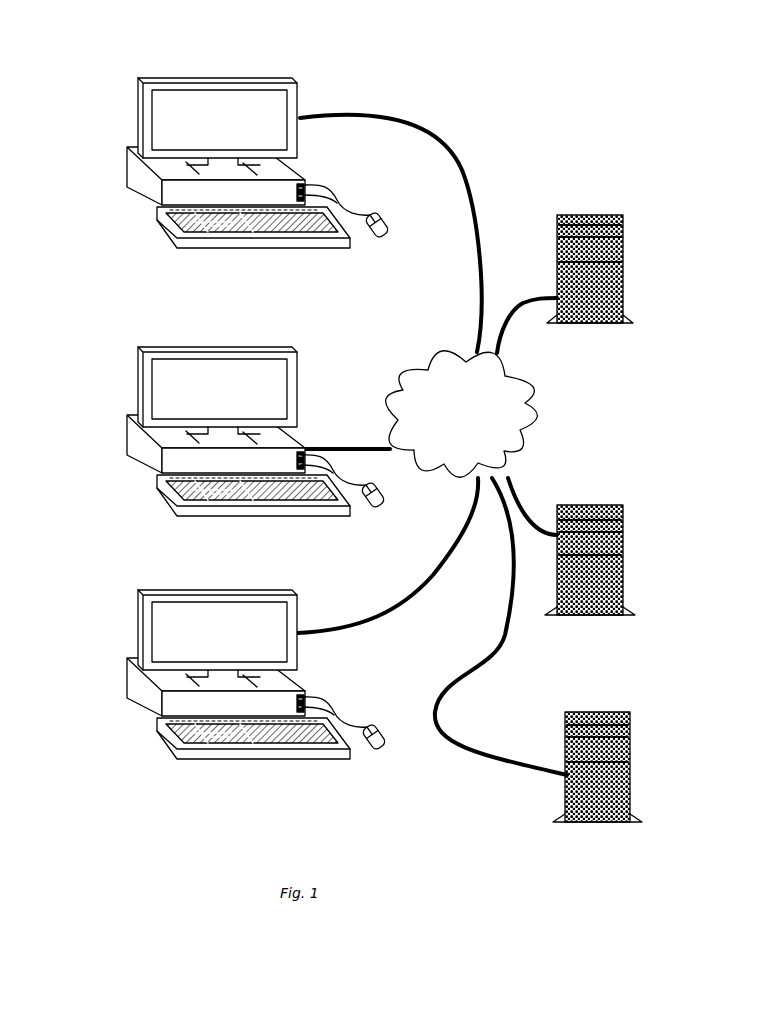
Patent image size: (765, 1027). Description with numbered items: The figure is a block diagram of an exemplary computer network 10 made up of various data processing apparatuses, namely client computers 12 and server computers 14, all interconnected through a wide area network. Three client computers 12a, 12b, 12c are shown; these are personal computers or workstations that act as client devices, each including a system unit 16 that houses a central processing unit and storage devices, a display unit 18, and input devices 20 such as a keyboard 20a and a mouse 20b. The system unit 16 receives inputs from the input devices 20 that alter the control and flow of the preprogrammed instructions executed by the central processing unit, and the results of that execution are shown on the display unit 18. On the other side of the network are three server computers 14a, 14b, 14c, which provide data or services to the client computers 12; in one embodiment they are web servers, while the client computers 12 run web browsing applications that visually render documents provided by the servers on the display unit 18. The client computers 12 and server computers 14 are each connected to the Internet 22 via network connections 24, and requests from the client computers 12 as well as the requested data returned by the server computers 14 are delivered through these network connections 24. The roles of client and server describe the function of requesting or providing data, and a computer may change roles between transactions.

The computer network 10 is at (424, 64).
The client computers 12 is at (55, 157).
The client computer 12a is at (120, 158).
The client computer 12b is at (120, 427).
The client computer 12c is at (120, 668).
The server computers 14 is at (628, 265).
The server computer 14a is at (623, 222).
The server computer 14b is at (632, 605).
The server computer 14c is at (597, 767).
The system unit 16 is at (137, 195).
The display unit 18 is at (263, 107).
The input devices 20 is at (301, 240).
The keyboard 20a is at (197, 245).
The mouse 20b is at (390, 220).
The Internet 22 is at (453, 440).
The network connections 24 is at (447, 128).